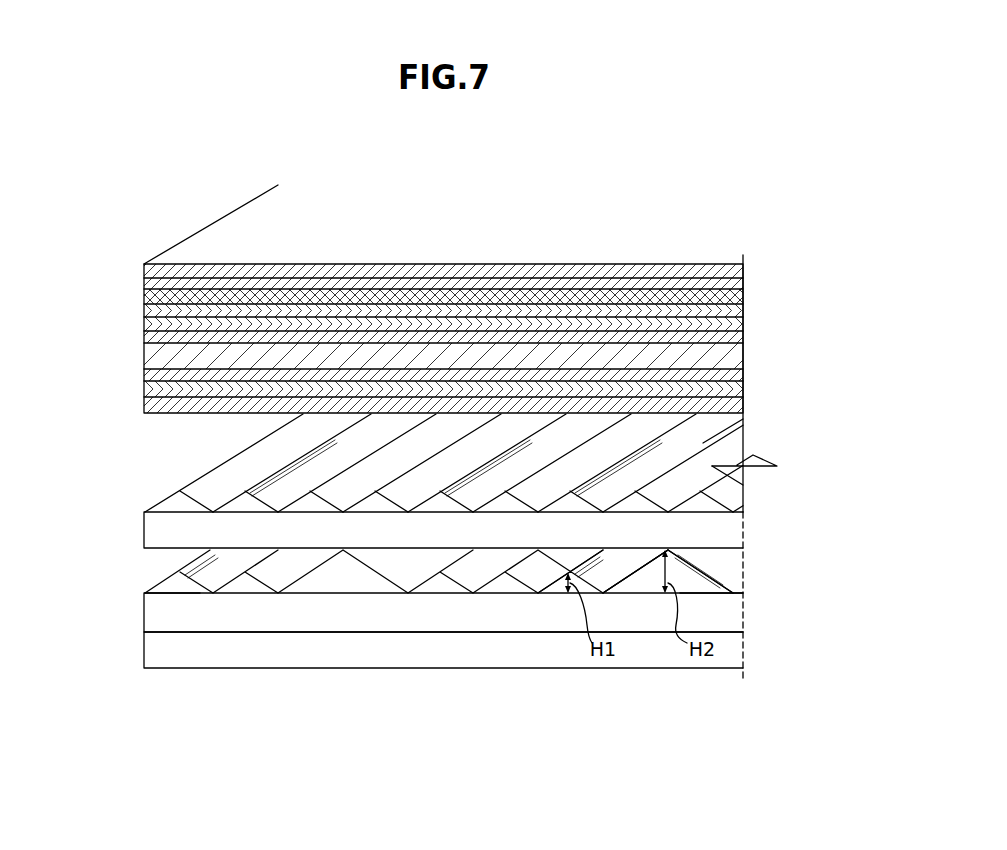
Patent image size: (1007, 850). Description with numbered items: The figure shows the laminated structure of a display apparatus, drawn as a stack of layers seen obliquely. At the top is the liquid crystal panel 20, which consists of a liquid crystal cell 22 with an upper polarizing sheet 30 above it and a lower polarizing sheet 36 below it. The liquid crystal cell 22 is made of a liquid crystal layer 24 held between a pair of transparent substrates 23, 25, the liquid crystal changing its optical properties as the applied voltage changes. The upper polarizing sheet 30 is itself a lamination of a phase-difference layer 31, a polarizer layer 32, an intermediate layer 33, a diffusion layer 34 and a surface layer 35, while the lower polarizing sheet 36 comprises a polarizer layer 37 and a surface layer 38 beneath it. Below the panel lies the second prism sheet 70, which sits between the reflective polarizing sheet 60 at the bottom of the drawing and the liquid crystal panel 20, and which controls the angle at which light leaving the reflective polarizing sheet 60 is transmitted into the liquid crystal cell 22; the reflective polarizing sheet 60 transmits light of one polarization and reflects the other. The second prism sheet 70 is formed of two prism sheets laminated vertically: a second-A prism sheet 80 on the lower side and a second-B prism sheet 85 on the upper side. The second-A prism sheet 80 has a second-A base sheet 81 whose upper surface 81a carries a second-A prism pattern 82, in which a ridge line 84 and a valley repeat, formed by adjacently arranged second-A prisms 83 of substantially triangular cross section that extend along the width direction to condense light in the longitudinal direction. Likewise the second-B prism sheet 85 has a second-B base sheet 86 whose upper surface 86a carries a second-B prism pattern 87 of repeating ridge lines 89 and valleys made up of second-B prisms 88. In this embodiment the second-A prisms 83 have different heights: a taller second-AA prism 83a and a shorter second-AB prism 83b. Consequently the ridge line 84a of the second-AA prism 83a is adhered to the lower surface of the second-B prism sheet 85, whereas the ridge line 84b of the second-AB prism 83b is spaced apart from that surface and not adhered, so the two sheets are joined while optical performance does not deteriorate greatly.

The liquid crystal panel 20 is at (384, 344).
The liquid crystal cell 22 is at (384, 351).
The transparent substrate 23 is at (147, 336).
The liquid crystal layer 24 is at (147, 353).
The transparent substrate 25 is at (409, 378).
The upper polarizing sheet 30 is at (443, 253).
The phase-difference layer 31 is at (417, 213).
The polarizer layer 32 is at (303, 310).
The intermediate layer 33 is at (333, 297).
The diffusion layer 34 is at (383, 283).
The surface layer 35 is at (415, 270).
The lower polarizing sheet 36 is at (384, 414).
The polarizer layer 37 is at (144, 388).
The surface layer 38 is at (147, 405).
The reflective polarizing sheet 60 is at (153, 652).
The second prism sheet 70 is at (448, 567).
The second-A prism sheet 80 is at (472, 650).
The second-A base sheet 81 is at (153, 617).
The upper surface of the second-A base sheet 81a is at (160, 591).
The second-A prism pattern 82 is at (737, 593).
The second-A prisms 83 is at (511, 650).
The second-AA prism 83a is at (735, 588).
The second-AB prism 83b is at (617, 557).
The ridge line 84 is at (592, 651).
The ridge line of the second-AA prism 84a is at (672, 550).
The ridge line of the second-AB prism 84b is at (568, 573).
The second-B prism sheet 85 is at (442, 458).
The second-B base sheet 86 is at (722, 523).
The upper surface of the second-B base sheet 86a is at (713, 503).
The second-B prism pattern 87 is at (689, 481).
The second-B prisms 88 is at (718, 455).
The ridge line 89 is at (703, 440).